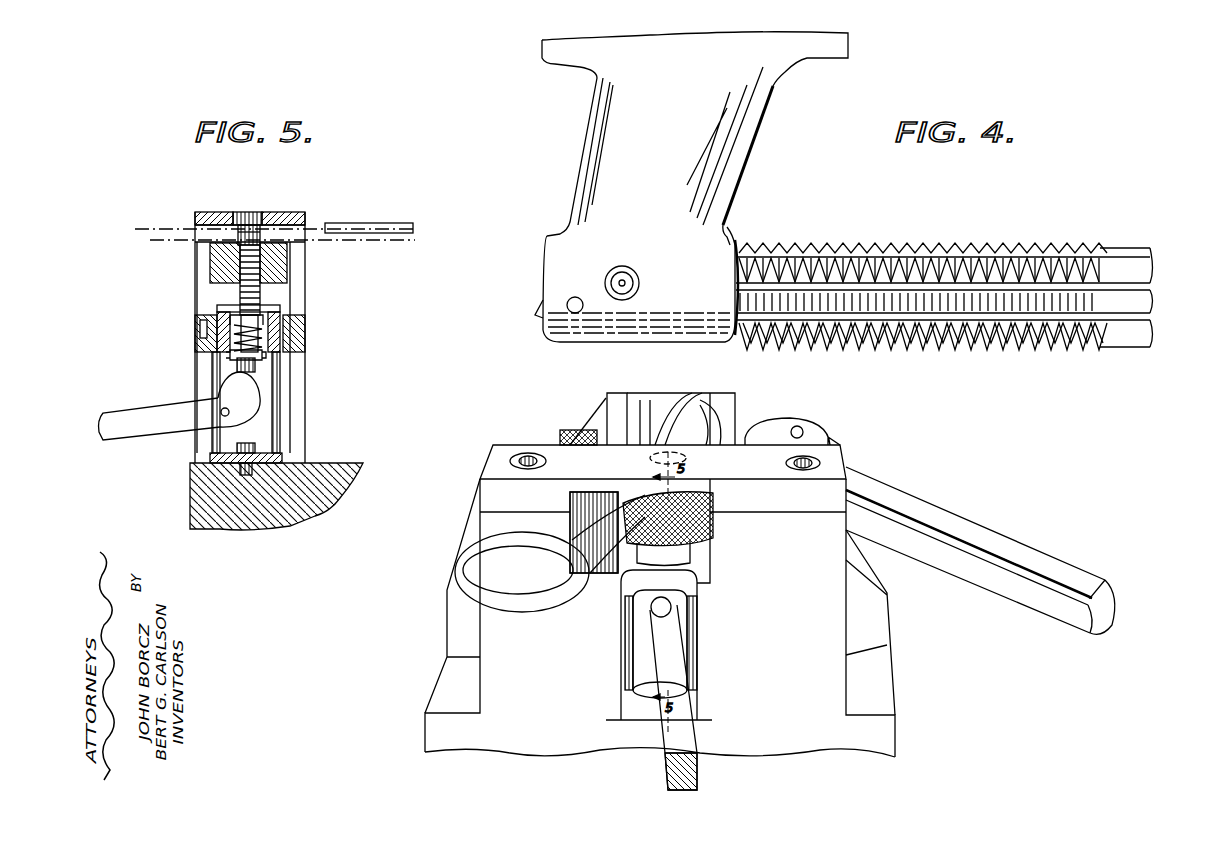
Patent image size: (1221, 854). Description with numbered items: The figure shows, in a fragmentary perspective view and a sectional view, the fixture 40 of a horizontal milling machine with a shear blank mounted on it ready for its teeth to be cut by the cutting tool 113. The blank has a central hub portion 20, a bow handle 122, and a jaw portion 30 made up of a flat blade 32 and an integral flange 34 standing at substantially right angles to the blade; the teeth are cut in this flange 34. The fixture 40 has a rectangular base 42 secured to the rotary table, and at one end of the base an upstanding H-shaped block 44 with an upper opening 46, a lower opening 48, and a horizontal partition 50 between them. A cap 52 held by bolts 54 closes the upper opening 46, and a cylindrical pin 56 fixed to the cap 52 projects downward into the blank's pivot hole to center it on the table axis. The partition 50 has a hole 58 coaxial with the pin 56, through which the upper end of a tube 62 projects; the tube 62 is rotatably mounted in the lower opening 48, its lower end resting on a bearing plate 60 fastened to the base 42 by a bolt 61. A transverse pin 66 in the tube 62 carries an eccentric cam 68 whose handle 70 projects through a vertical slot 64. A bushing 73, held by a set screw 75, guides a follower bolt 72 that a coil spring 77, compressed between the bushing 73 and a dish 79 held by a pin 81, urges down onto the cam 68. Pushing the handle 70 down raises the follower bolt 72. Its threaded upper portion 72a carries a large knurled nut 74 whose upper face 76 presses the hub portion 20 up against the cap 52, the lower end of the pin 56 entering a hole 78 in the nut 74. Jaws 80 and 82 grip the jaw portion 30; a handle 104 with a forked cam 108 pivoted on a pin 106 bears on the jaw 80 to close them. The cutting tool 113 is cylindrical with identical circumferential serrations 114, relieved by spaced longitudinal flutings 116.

In FIG. 5, the central hub portion 20 is at (310, 245).
In FIG. 4, the central hub portion 20 is at (685, 493).
In FIG. 5, the jaw portion 30 is at (170, 220).
In FIG. 5, the flat blade 32 is at (388, 242).
In FIG. 4, the flat blade 32 is at (688, 405).
In FIG. 5, the integral flange 34 is at (355, 225).
In FIG. 4, the integral flange 34 is at (675, 395).
In FIG. 4, the fixture 40 is at (570, 415).
In FIG. 5, the rectangular base 42 is at (190, 485).
In FIG. 4, the rectangular base 42 is at (423, 728).
In FIG. 5, the upstanding rectangular block 44 is at (195, 250).
In FIG. 4, the upstanding rectangular block 44 is at (862, 650).
In FIG. 5, the upper opening 46 is at (292, 292).
In FIG. 4, the upper opening 46 is at (712, 558).
In FIG. 5, the lower opening 48 is at (200, 350).
In FIG. 4, the lower opening 48 is at (623, 637).
In FIG. 5, the horizontal partition 50 is at (305, 332).
In FIG. 4, the horizontal partition 50 is at (715, 572).
In FIG. 5, the cap 52 is at (280, 215).
In FIG. 4, the cap 52 is at (545, 455).
In FIG. 4, the bolts 54 is at (822, 462).
In FIG. 5, the cylindrical pin 56 is at (242, 232).
In FIG. 4, the cylindrical pin 56 is at (652, 456).
In FIG. 5, the hole 58 is at (200, 330).
In FIG. 5, the bearing plate 60 is at (282, 457).
In FIG. 4, the bearing plate 60 is at (697, 693).
In FIG. 5, the bolt 61 is at (255, 445).
In FIG. 5, the tube 62 is at (280, 400).
In FIG. 4, the tube 62 is at (690, 666).
In FIG. 5, the vertical slot 64 is at (215, 432).
In FIG. 4, the vertical slot 64 is at (652, 616).
In FIG. 5, the pin 66 is at (216, 404).
In FIG. 4, the pin 66 is at (690, 636).
In FIG. 5, the eccentric cam 68 is at (228, 392).
In FIG. 4, the eccentric cam 68 is at (680, 611).
In FIG. 5, the handle 70 is at (121, 440).
In FIG. 4, the handle 70 is at (690, 746).
In FIG. 5, the follower bolt 72 is at (237, 365).
In FIG. 4, the follower bolt 72 is at (676, 604).
In FIG. 5, the upper portion of bolt 72a is at (225, 298).
In FIG. 5, the bushing 73 is at (226, 306).
In FIG. 4, the bushing 73 is at (715, 548).
In FIG. 5, the knurled nut 74 is at (210, 265).
In FIG. 4, the knurled nut 74 is at (737, 500).
In FIG. 5, the set screw 75 is at (282, 314).
In FIG. 5, the upper face of nut 76 is at (212, 240).
In FIG. 5, the coil spring 77 is at (265, 340).
In FIG. 5, the hole 78 is at (287, 268).
In FIG. 5, the dish 79 is at (262, 354).
In FIG. 4, the jaw 80 is at (727, 398).
In FIG. 5, the pin 81 is at (262, 362).
In FIG. 4, the jaw 82 is at (628, 400).
In FIG. 4, the handle 104 is at (968, 530).
In FIG. 4, the pin 106 is at (800, 430).
In FIG. 4, the forked cam 108 is at (768, 422).
In FIG. 4, the cutting tool 113 is at (932, 242).
In FIG. 4, the circumferential serrations 114 is at (797, 247).
In FIG. 4, the longitudinal flutings 116 is at (1150, 320).
In FIG. 4, the bow handle 122 is at (517, 612).